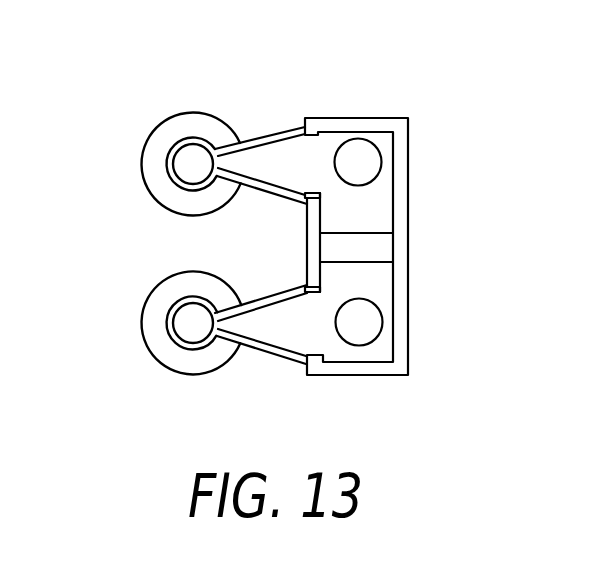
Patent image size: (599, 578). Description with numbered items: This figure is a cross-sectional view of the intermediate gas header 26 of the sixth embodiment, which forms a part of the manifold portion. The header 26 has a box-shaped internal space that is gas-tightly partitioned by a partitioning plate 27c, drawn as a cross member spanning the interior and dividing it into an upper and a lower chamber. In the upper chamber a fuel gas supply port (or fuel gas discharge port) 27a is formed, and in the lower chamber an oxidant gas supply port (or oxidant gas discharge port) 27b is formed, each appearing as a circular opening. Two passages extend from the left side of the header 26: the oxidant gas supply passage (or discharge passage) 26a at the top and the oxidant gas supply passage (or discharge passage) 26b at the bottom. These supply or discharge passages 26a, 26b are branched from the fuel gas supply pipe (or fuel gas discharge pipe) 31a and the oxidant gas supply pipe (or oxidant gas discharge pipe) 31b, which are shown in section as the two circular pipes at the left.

The intermediate gas header 26 is at (349, 118).
The oxidant gas supply passage 26a is at (255, 140).
The oxidant gas supply passage 26b is at (283, 320).
The fuel gas supply port 27a is at (380, 157).
The oxidant gas supply port 27b is at (380, 310).
The partitioning plate 27c is at (367, 233).
The fuel gas supply pipe 31a is at (183, 155).
The oxidant gas supply pipe 31b is at (188, 323).